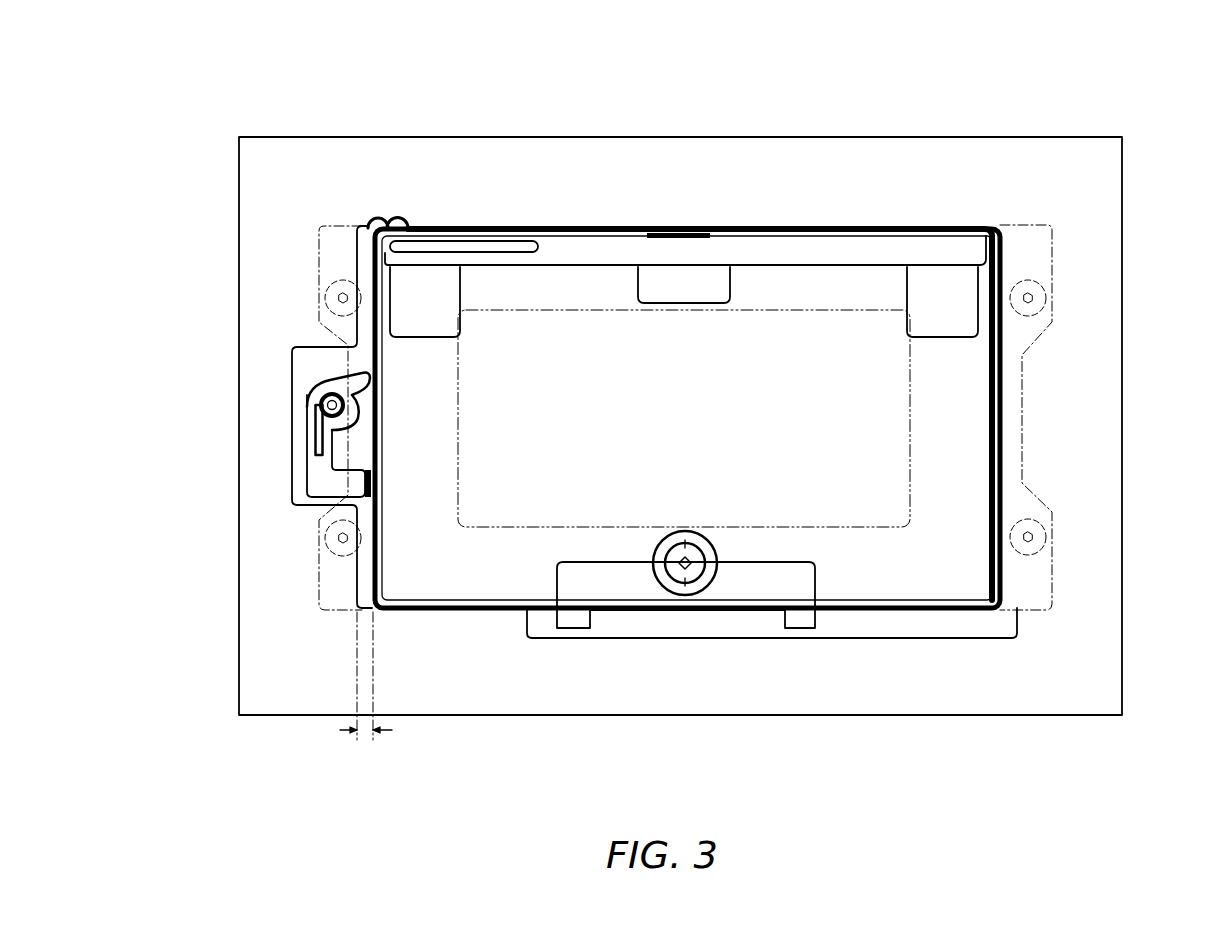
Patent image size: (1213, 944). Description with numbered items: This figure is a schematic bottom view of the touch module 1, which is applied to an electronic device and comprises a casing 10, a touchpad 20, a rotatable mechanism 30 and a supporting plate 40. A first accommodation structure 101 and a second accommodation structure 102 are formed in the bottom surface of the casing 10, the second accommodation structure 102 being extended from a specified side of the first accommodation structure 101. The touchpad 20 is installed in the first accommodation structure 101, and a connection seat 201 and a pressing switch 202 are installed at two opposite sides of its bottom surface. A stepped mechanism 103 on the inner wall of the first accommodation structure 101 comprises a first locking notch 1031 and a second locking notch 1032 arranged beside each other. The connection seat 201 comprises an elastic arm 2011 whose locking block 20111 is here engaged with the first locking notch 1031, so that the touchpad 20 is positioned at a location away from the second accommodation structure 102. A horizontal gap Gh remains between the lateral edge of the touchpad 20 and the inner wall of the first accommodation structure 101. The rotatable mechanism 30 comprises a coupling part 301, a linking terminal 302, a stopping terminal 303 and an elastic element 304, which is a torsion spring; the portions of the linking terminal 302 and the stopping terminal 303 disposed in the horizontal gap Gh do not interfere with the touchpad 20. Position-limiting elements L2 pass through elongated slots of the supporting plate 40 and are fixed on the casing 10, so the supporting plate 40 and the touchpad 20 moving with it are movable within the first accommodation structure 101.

The touch module 1 is at (70, 52).
The casing 10 is at (1105, 420).
The first accommodation structure 101 is at (902, 227).
The second accommodation structure 102 is at (288, 507).
The stepped mechanism 103 is at (344, 136).
The first locking notch 1031 is at (400, 213).
The second locking notch 1032 is at (378, 215).
The touchpad 20 is at (818, 337).
The connection seat 201 is at (737, 250).
The elastic arm 2011 is at (488, 236).
The locking block 20111 is at (410, 222).
The pressing switch 202 is at (673, 585).
The rotatable mechanism 30 is at (220, 328).
The coupling part 301 is at (323, 405).
The linking terminal 302 is at (357, 377).
The stopping terminal 303 is at (340, 485).
The elastic element 304 is at (320, 416).
The supporting plate 40 is at (1028, 250).
The position-limiting element L2 is at (1033, 298).
The horizontal gap Gh is at (363, 735).